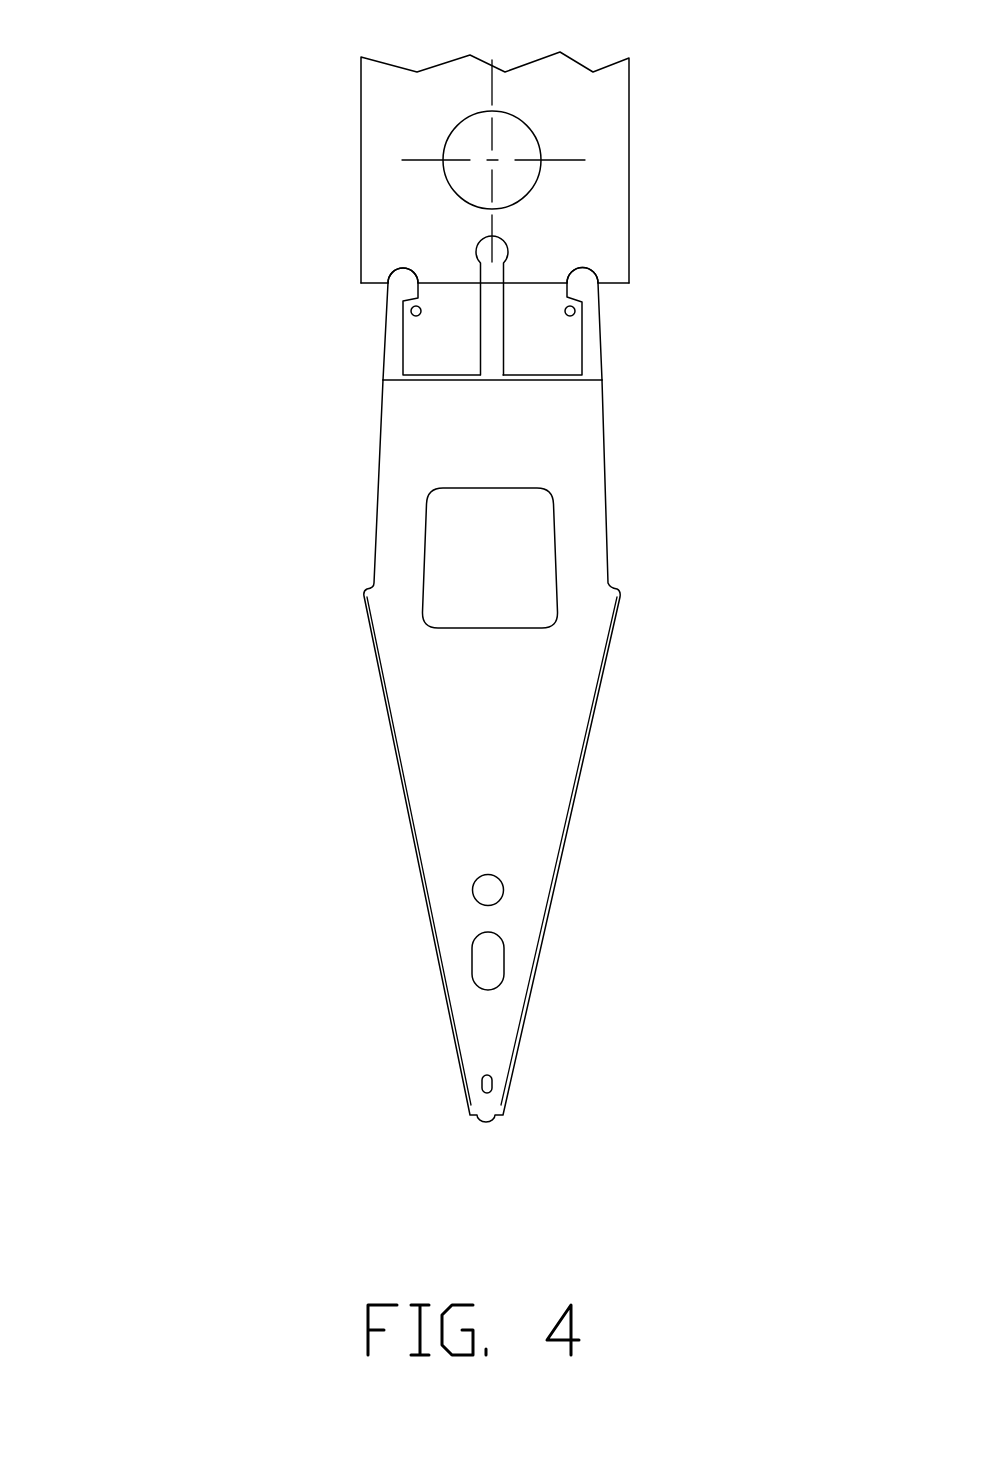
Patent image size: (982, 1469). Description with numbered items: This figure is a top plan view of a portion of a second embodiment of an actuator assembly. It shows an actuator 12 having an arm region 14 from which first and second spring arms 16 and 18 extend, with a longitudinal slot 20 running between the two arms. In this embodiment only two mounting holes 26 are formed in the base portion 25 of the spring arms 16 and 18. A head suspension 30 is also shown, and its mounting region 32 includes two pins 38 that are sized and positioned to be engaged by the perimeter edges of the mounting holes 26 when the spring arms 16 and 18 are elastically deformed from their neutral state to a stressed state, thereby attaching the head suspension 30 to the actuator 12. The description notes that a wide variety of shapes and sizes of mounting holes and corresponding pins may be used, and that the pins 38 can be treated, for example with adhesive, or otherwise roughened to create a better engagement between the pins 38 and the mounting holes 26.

The actuator 12 is at (610, 100).
The arm region 14 is at (613, 193).
The first spring arm 16 is at (464, 247).
The second spring arm 18 is at (528, 278).
The longitudinal slot 20 is at (493, 358).
The base portion 25 is at (448, 305).
The mounting holes 26 is at (414, 318).
The head suspension 30 is at (660, 633).
The mounting region 32 is at (592, 370).
The pins 38 is at (411, 312).